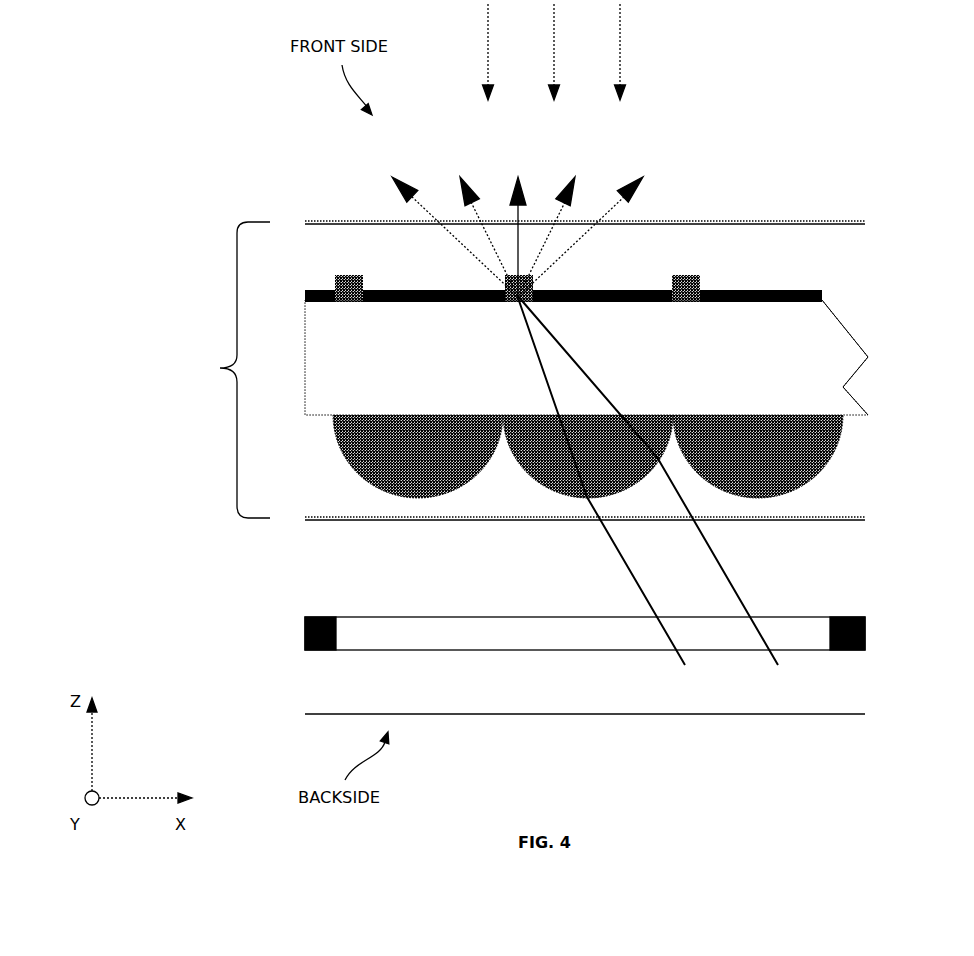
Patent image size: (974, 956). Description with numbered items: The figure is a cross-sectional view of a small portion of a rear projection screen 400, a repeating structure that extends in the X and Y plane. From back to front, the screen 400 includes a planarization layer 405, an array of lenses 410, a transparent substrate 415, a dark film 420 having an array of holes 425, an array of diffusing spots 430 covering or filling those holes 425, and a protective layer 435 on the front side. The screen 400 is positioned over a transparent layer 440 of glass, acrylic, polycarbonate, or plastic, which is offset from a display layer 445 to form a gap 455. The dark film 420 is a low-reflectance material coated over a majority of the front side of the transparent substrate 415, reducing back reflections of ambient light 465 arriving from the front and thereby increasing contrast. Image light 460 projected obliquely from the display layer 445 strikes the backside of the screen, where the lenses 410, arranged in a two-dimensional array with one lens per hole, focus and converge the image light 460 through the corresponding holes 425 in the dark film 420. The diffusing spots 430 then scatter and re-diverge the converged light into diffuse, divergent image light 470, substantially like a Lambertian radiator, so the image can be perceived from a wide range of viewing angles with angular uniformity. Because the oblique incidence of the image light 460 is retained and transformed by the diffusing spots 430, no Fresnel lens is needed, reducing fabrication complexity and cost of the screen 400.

The rear projection screen 400 is at (185, 370).
The planarization layer 405 is at (585, 509).
The lenses 410 is at (588, 456).
The transparent substrate 415 is at (586, 357).
The dark film 420 is at (822, 293).
The holes 425 is at (690, 315).
The diffusing spots 430 is at (765, 173).
The protective layer 435 is at (585, 246).
The transparent layer 440 is at (585, 546).
The display layer 445 is at (905, 600).
The gap 455 is at (585, 633).
The image light 460 is at (742, 593).
The ambient light 465 is at (620, 72).
The divergent image light 470 is at (642, 182).